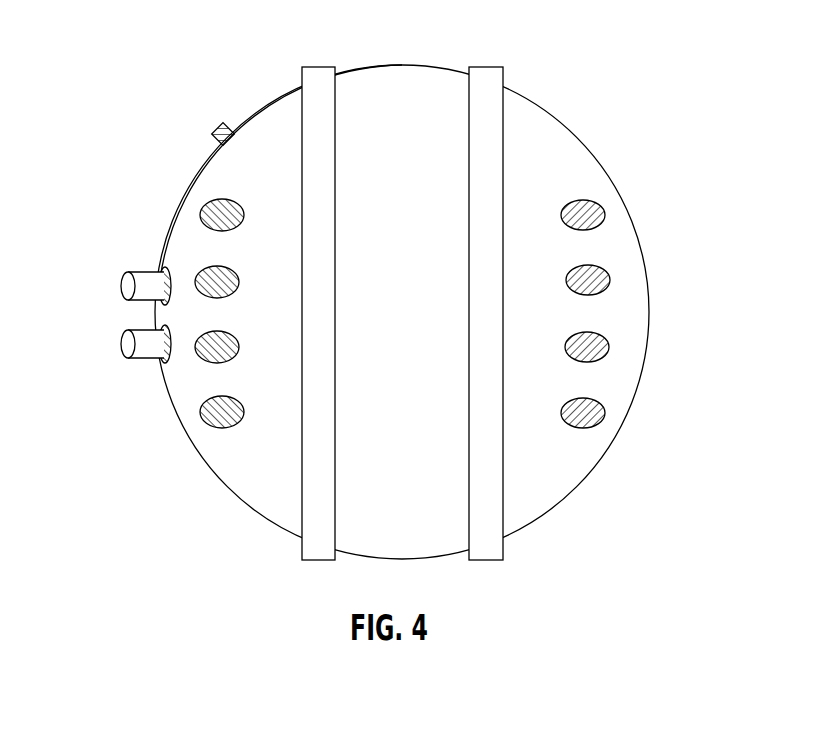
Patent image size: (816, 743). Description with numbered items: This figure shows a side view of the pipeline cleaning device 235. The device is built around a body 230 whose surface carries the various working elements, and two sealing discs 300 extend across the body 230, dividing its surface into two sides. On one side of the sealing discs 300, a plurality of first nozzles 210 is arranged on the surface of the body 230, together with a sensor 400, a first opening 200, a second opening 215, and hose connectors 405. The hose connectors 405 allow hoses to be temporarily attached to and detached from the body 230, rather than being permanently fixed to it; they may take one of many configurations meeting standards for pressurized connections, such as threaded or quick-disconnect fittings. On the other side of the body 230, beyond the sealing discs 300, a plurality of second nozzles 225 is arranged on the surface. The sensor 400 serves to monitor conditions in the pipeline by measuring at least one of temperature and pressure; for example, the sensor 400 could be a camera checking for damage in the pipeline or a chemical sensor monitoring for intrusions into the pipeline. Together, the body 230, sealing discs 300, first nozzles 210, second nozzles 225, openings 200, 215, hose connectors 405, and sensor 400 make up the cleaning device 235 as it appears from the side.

The first opening 200 is at (162, 360).
The plurality of first nozzles 210 is at (196, 278).
The second opening 215 is at (162, 270).
The plurality of second nozzles 225 is at (604, 212).
The body 230 is at (538, 97).
The device 235 is at (277, 92).
The sealing discs 300 is at (318, 66).
The sensor 400 is at (212, 127).
The hose connectors 405 is at (107, 315).